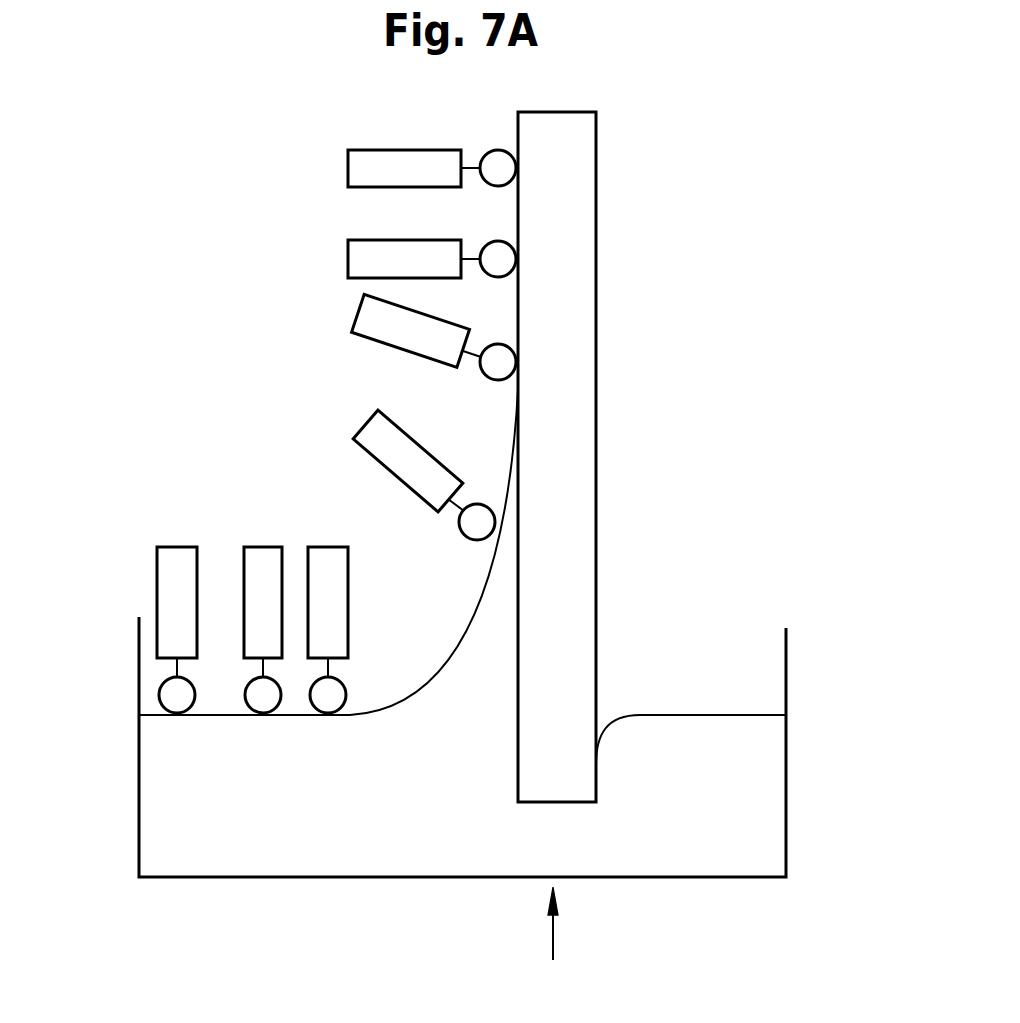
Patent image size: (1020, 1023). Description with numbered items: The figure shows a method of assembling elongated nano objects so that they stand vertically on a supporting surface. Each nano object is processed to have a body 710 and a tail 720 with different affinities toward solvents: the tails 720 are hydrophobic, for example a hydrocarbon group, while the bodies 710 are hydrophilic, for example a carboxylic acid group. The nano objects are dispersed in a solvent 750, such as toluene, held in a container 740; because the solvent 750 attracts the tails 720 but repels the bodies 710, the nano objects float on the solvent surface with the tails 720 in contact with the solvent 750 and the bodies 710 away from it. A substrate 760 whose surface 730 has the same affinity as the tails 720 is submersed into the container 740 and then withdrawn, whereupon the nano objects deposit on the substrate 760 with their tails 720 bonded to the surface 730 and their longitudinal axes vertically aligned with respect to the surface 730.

The body 710 is at (387, 175).
The tail 720 is at (494, 368).
The surface 730 is at (518, 133).
The container 740 is at (553, 943).
The solvent 750 is at (352, 798).
The substrate 760 is at (574, 190).